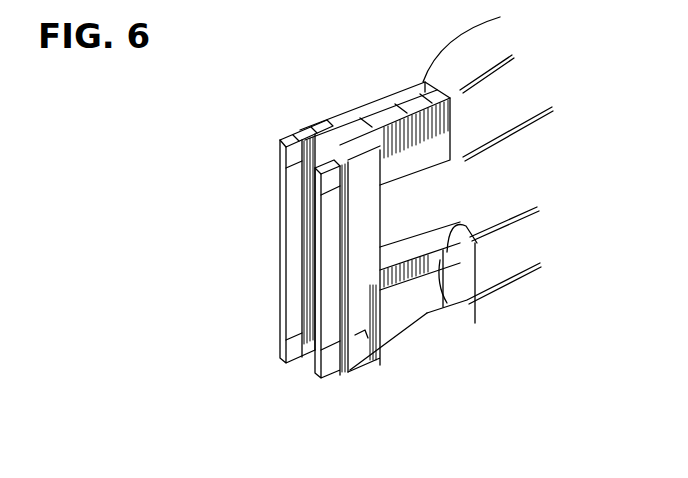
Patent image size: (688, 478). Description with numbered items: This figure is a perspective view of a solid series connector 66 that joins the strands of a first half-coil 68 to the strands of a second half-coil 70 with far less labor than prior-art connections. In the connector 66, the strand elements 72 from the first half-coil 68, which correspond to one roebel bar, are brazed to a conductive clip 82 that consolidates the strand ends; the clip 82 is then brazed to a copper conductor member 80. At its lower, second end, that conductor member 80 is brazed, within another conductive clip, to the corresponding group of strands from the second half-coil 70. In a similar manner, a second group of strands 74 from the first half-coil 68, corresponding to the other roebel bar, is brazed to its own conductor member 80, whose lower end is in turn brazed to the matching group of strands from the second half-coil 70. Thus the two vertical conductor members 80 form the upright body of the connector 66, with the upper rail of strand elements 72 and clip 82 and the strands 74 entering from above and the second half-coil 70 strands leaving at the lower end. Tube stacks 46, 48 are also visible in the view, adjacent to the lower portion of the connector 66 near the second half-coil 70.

The connector 66 is at (232, 349).
The conductive clip 82 is at (282, 163).
The group of strands 74 is at (373, 137).
The conductor member 80 is at (363, 360).
The strand elements 72 is at (388, 132).
The first half-coil 68 is at (503, 87).
The second half-coil 70 is at (520, 248).
The tube stack 48 is at (473, 323).
The tube stack 46 is at (447, 303).